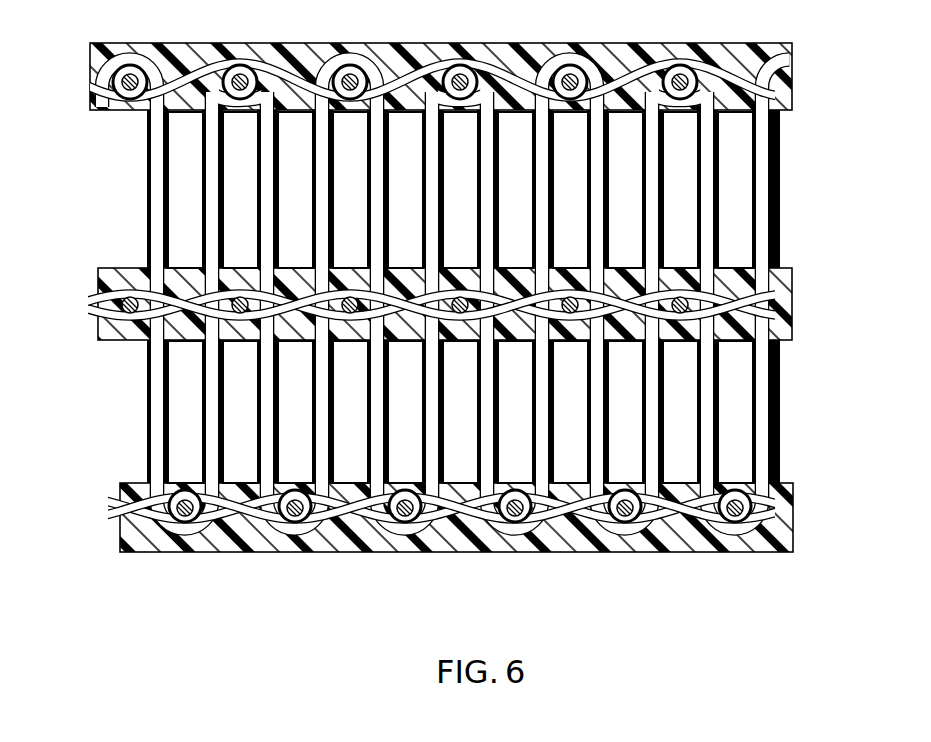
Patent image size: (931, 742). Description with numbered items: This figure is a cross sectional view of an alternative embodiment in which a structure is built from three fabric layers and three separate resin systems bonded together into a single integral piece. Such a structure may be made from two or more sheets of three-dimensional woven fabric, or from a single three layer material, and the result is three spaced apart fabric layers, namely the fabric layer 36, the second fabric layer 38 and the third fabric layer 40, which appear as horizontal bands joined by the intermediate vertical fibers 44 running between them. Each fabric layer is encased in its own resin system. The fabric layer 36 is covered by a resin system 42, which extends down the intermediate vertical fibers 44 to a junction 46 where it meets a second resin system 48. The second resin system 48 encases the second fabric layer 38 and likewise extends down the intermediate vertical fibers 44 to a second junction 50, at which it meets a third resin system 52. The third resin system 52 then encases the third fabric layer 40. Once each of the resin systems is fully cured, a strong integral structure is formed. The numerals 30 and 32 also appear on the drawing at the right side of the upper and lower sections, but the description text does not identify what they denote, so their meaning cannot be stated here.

The upper fin and tube assembly 30 is at (778, 194).
The lower fin and tube assembly 32 is at (778, 432).
The fabric layer 36 is at (793, 52).
The second fabric layer 38 is at (790, 280).
The third fabric layer 40 is at (790, 517).
The resin system 42 is at (98, 48).
The intermediate vertical fibers 44 is at (720, 158).
The junction 46 is at (147, 195).
The second resin system 48 is at (100, 276).
The second junction 50 is at (148, 432).
The third resin system 52 is at (122, 540).